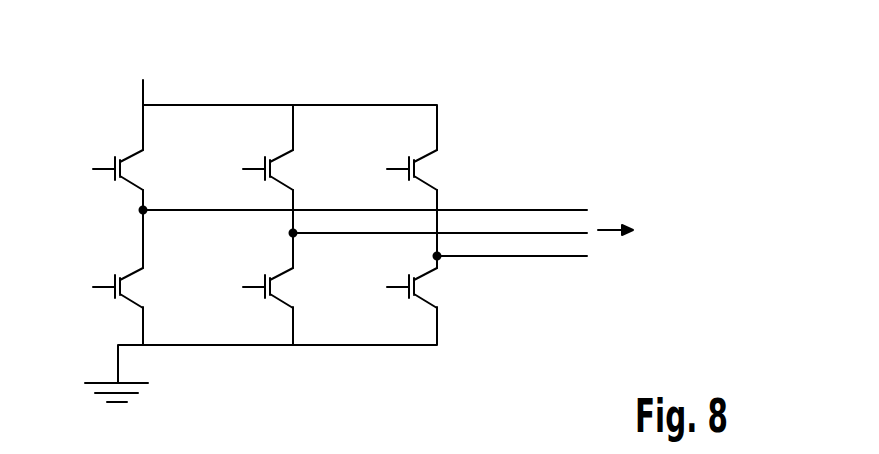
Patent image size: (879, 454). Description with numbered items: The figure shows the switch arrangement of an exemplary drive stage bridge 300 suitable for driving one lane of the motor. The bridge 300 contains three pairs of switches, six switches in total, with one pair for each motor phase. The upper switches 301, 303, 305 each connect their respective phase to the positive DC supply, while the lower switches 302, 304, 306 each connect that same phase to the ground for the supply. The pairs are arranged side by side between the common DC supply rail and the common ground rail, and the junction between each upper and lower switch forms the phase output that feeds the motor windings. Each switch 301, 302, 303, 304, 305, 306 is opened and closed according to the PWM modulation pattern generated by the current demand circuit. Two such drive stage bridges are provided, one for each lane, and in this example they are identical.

The drive stage bridge 300 is at (431, 77).
The upper switch 301 is at (146, 197).
The lower switch 302 is at (145, 250).
The upper switch 303 is at (295, 197).
The lower switch 304 is at (295, 250).
The upper switch 305 is at (438, 132).
The lower switch 306 is at (440, 260).